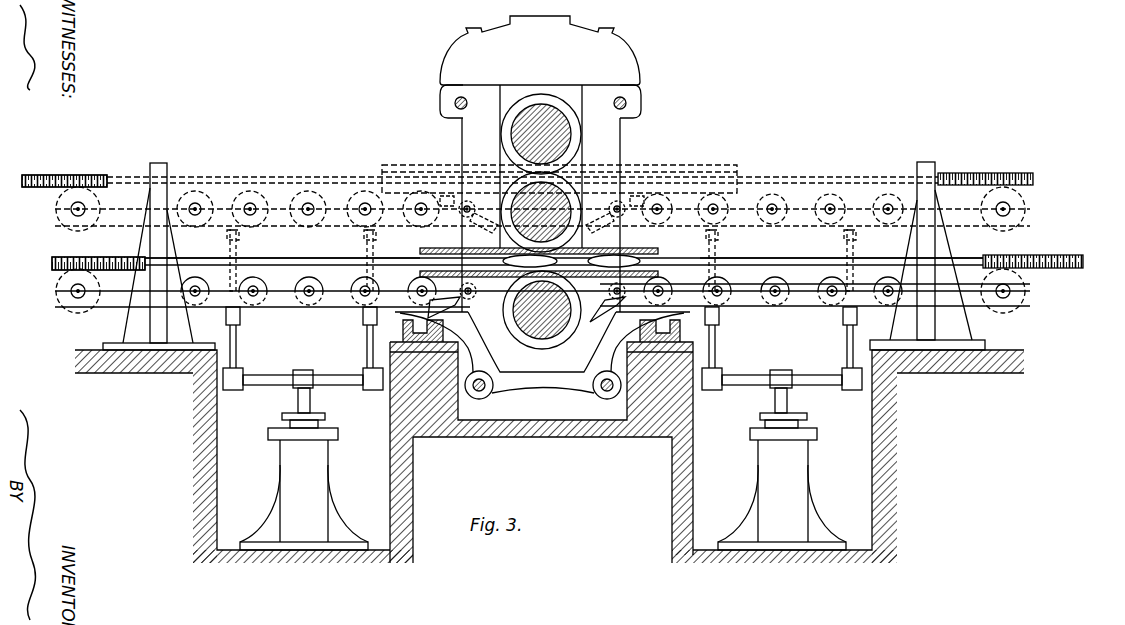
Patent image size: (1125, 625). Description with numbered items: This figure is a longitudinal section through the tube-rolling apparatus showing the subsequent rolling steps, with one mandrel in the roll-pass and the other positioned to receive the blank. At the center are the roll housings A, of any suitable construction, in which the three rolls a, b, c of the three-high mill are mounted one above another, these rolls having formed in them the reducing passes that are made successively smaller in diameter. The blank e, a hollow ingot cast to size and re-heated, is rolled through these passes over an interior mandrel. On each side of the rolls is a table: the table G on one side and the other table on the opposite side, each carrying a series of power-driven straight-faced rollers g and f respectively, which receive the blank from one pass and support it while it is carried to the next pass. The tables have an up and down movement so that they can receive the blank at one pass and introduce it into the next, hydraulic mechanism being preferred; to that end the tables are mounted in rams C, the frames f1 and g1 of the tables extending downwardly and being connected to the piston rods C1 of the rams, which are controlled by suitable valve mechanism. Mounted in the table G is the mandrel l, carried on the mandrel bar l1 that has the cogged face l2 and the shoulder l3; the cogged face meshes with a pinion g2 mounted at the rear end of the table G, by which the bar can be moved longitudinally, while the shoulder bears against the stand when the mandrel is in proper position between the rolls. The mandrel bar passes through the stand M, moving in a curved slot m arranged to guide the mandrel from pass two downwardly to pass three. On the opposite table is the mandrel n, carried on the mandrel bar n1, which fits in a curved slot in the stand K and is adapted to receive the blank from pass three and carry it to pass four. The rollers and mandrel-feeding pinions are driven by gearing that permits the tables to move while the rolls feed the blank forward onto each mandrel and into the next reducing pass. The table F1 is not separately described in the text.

The roll housings A is at (462, 134).
The roll a is at (581, 135).
The roll b is at (550, 212).
The roll c is at (505, 311).
The blank e is at (534, 259).
The mandrel l is at (500, 256).
The mandrel n is at (614, 261).
The mandrel bar n1 is at (841, 249).
The mandrel bar l1 is at (293, 247).
The cogged face l2 is at (64, 214).
The shoulder l3 is at (130, 271).
The stand M is at (148, 240).
The curved slot m is at (160, 264).
The stand K is at (917, 242).
The rollers g is at (308, 286).
The pinion g2 is at (64, 291).
The frame g1 is at (273, 378).
The table G is at (301, 299).
The rollers f is at (760, 290).
The frame f1 is at (748, 378).
The roller table F1 is at (820, 268).
The rams C is at (543, 489).
The piston rods C1 is at (298, 400).